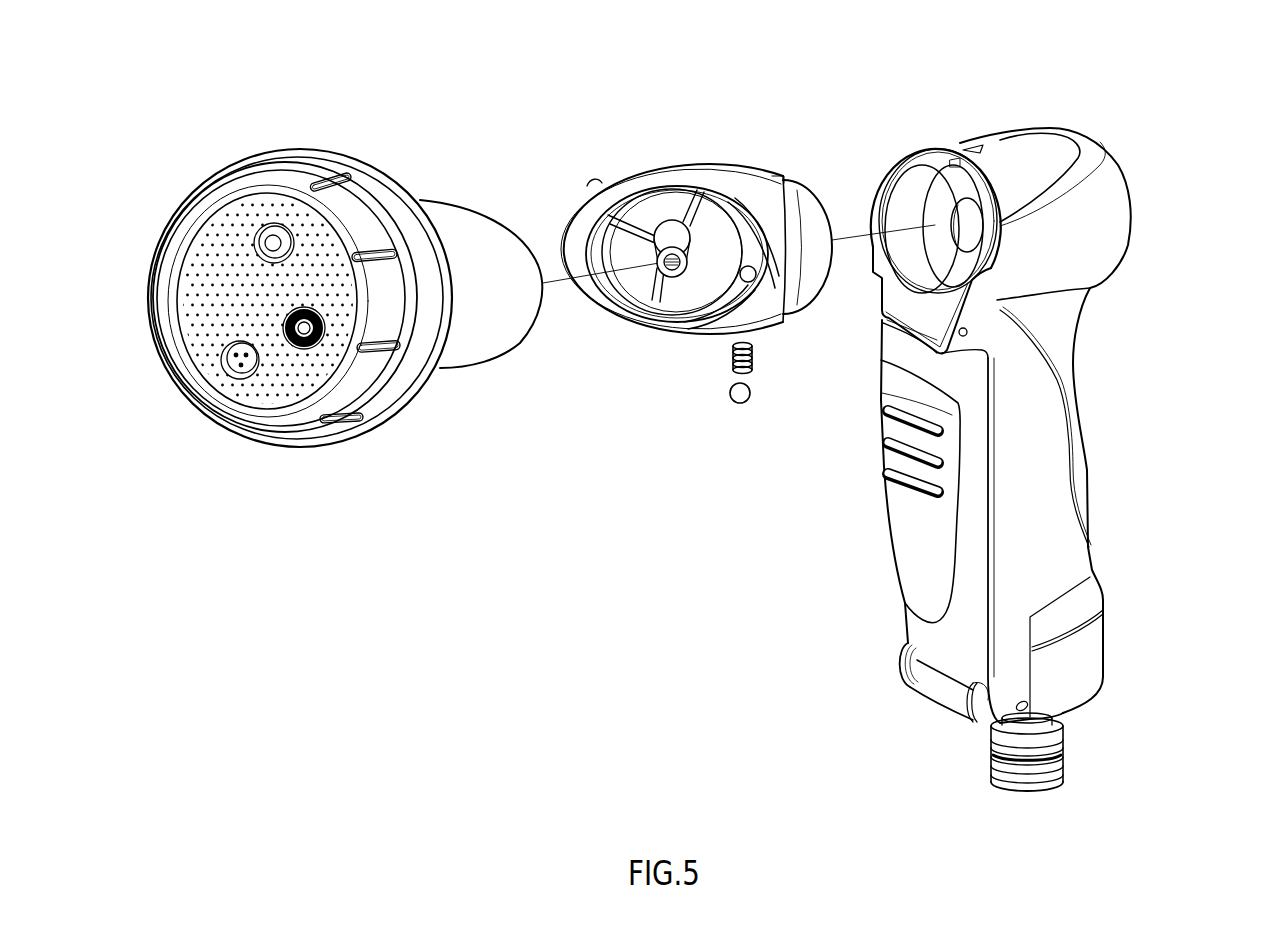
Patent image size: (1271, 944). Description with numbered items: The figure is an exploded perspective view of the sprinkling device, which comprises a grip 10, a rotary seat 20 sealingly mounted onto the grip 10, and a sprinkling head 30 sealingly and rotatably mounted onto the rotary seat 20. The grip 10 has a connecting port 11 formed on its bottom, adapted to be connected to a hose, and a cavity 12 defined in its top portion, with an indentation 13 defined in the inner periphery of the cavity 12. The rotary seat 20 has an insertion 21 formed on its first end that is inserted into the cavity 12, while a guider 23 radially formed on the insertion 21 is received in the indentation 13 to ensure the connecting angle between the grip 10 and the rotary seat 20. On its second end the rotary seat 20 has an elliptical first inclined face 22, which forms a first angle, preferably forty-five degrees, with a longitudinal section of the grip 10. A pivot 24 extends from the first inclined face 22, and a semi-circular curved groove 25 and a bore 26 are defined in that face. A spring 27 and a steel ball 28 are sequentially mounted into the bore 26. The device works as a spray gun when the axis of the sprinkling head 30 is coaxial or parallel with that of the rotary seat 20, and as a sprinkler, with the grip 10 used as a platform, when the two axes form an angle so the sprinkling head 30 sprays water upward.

The grip 10 is at (1031, 416).
The connecting port 11 is at (1063, 737).
The cavity 12 is at (922, 185).
The indentation 13 is at (960, 167).
The rotary seat 20 is at (708, 270).
The insertion 21 is at (812, 285).
The first inclined face 22 is at (673, 330).
The guider 23 is at (785, 178).
The pivot 24 is at (672, 237).
The curved groove 25 is at (633, 305).
The bore 26 is at (748, 283).
The spring 27 is at (733, 358).
The steel ball 28 is at (742, 395).
The sprinkling head 30 is at (463, 237).